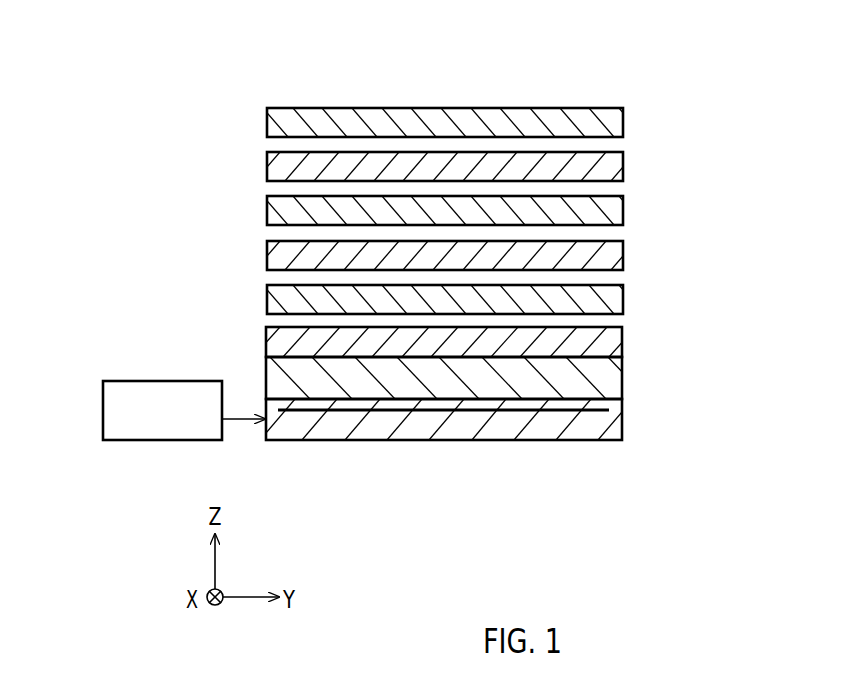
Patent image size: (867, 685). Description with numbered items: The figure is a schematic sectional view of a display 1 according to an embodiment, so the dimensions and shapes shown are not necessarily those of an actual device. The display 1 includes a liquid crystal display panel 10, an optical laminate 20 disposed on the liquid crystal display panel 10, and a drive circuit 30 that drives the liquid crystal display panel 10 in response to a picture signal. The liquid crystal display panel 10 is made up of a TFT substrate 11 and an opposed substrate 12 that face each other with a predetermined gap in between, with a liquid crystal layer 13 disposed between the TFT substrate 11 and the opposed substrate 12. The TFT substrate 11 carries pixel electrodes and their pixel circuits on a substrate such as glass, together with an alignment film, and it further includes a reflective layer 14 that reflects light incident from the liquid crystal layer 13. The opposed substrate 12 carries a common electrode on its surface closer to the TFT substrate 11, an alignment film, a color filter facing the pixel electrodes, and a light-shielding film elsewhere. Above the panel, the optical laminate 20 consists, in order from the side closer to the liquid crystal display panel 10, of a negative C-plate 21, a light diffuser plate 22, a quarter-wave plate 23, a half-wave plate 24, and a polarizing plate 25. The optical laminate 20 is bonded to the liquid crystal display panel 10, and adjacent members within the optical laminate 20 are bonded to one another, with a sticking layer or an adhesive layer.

The display 1 is at (596, 91).
The liquid crystal display panel 10 is at (502, 402).
The TFT substrate 11 is at (612, 422).
The opposed substrate 12 is at (612, 343).
The liquid crystal layer 13 is at (612, 378).
The reflective layer 14 is at (485, 415).
The optical laminate 20 is at (503, 210).
The negative C-plate 21 is at (477, 299).
The light diffuser plate 22 is at (613, 254).
The λ/4 plate 23 is at (613, 209).
The λ/2 plate 24 is at (613, 165).
The polarizing plate 25 is at (613, 121).
The drive circuit 30 is at (165, 380).